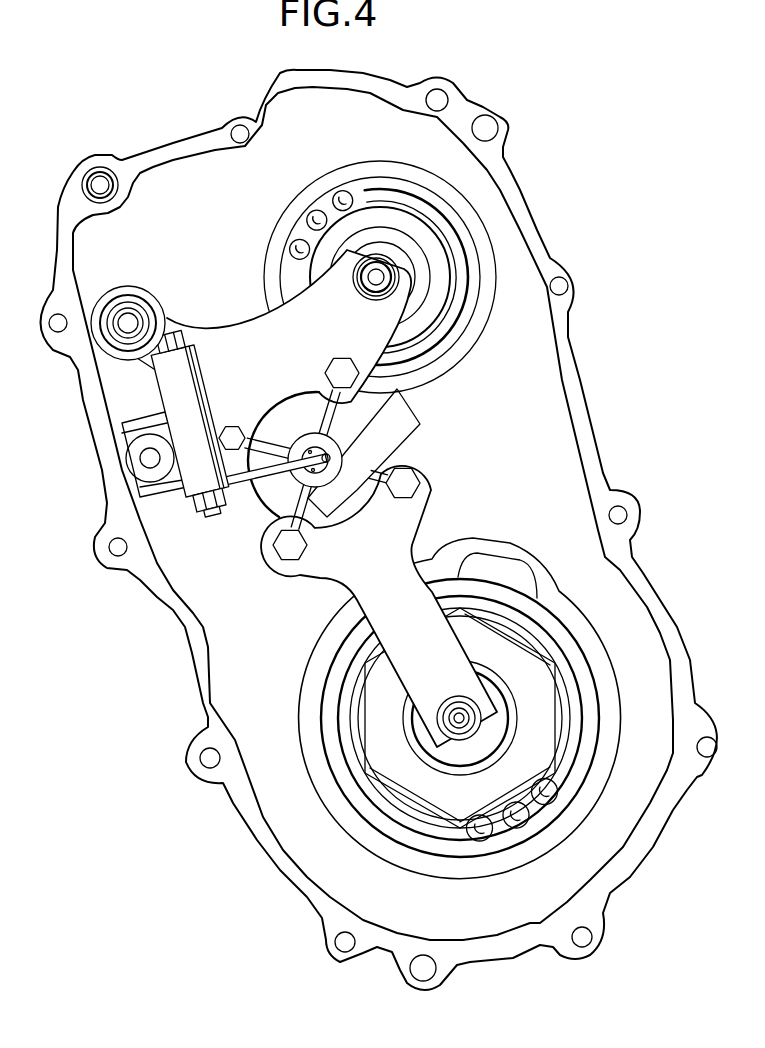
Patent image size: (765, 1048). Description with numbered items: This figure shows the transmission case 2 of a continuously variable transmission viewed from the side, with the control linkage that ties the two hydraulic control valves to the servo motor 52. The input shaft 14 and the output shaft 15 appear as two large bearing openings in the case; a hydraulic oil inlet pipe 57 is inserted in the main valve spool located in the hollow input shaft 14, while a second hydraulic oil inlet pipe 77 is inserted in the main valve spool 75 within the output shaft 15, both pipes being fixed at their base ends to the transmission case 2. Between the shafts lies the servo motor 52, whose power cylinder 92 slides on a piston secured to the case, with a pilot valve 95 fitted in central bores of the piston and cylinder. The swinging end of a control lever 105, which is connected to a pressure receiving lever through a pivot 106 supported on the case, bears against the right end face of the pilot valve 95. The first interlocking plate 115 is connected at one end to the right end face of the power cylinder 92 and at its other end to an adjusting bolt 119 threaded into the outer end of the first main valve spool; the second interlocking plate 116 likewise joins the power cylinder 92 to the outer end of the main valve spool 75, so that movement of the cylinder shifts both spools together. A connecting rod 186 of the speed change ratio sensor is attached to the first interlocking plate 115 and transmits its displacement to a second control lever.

The transmission case 2 is at (537, 233).
The input shaft 14 is at (377, 228).
The output shaft 15 is at (453, 758).
The servo motor 52 is at (245, 524).
The hydraulic oil inlet pipe 57 is at (378, 289).
The main valve spool 75 is at (481, 722).
The hydraulic oil inlet pipe 77 is at (452, 702).
The power cylinder 92 is at (397, 450).
The pilot valve 95 is at (326, 455).
The control lever 105 is at (284, 471).
The pivot 106 is at (182, 332).
The first interlocking plate 115 is at (247, 331).
The second interlocking plate 116 is at (413, 525).
The adjusting bolt 119 is at (359, 293).
The connecting rod 186 is at (128, 300).